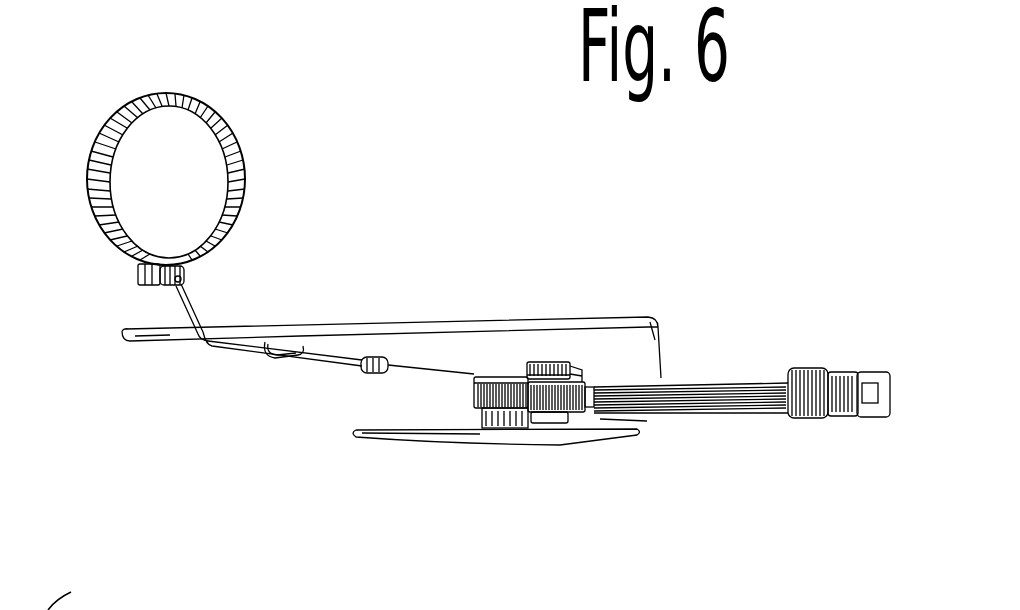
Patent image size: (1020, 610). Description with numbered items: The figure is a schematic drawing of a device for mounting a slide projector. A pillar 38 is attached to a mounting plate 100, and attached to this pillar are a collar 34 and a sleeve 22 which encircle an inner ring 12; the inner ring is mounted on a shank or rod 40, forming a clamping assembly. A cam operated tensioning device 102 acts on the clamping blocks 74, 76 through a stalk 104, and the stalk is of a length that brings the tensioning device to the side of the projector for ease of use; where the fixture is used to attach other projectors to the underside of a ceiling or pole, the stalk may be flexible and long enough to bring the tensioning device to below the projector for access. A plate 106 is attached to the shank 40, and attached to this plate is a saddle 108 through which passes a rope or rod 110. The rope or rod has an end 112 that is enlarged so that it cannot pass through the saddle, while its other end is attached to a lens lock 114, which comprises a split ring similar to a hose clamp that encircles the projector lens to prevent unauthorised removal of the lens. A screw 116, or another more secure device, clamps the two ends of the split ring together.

The lens lock 114 is at (285, 135).
The screw 116 is at (186, 277).
The rope or rod 110 is at (184, 298).
The saddle 108 is at (273, 356).
The end 112 is at (376, 373).
The plate 106 is at (386, 330).
The collar 34 is at (476, 377).
The pillar 38 is at (483, 422).
The inner ring 12 is at (529, 362).
The sleeve 22 is at (600, 380).
The shank or rod 40 is at (576, 380).
The stalk 104 is at (733, 390).
The cam operated tensioning device 102 is at (818, 465).
The mounting plate 100 is at (390, 437).
The clamping block 74 is at (573, 480).
The clamping block 76 is at (647, 421).